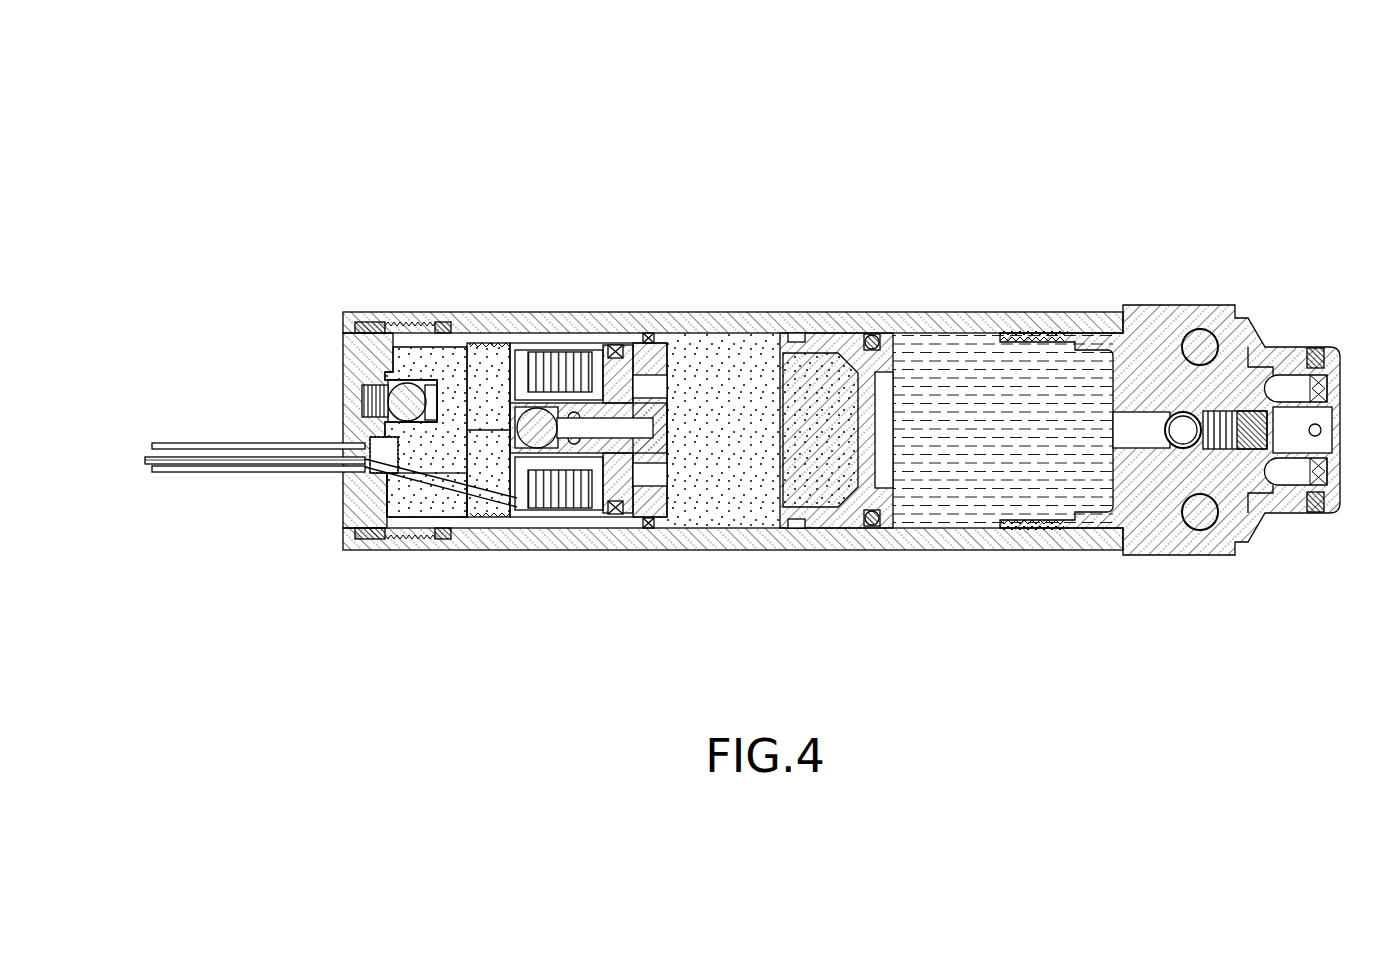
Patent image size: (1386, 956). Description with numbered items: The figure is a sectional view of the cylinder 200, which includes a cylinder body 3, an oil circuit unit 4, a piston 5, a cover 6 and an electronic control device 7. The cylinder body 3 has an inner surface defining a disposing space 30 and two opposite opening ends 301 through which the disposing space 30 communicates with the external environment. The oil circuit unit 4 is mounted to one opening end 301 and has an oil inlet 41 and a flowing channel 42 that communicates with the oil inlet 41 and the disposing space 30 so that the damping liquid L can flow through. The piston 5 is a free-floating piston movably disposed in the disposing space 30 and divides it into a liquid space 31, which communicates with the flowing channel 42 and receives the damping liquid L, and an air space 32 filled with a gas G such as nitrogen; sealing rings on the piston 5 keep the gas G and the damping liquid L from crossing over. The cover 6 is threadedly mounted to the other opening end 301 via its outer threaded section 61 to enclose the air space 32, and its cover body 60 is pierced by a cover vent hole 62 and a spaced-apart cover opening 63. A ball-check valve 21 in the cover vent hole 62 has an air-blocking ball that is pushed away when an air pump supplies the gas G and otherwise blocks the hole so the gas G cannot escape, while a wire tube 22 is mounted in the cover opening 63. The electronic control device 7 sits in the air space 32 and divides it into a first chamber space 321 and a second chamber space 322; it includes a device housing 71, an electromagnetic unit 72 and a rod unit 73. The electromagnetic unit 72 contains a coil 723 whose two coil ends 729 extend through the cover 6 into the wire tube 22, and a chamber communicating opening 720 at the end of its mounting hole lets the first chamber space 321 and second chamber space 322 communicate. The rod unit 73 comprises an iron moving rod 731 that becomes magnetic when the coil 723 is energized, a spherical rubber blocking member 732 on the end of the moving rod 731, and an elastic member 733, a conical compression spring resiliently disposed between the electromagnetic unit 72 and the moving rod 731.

The cylinder 200 is at (982, 215).
The cylinder body 3 is at (786, 330).
The opening ends 301 is at (384, 322).
The disposing space 30 is at (789, 437).
The air space 32 is at (789, 376).
The first chamber space 321 is at (723, 372).
The liquid space 31 is at (1003, 424).
The gas G is at (694, 362).
The damping liquid L is at (923, 352).
The piston 5 is at (807, 428).
The oil circuit unit 4 is at (1170, 439).
The oil inlet 41 is at (1183, 434).
The flowing channel 42 is at (1137, 428).
The cover 6 is at (326, 417).
The cover body 60 is at (360, 362).
The outer threaded section 61 is at (414, 522).
The cover vent hole 62 is at (352, 400).
The cover opening 63 is at (380, 452).
The ball-check valve 21 is at (410, 392).
The wire tube 22 is at (202, 478).
The coil ends 729 is at (180, 455).
The second chamber space 322 is at (484, 370).
The chamber communicating opening 720 is at (495, 468).
The electronic control device 7 is at (588, 434).
The electromagnetic unit 72 is at (547, 358).
The device housing 71 is at (580, 500).
The coil 723 is at (580, 352).
The moving rod 731 is at (610, 478).
The elastic member 733 is at (642, 445).
The rod unit 73 is at (548, 505).
The blocking member 732 is at (534, 436).